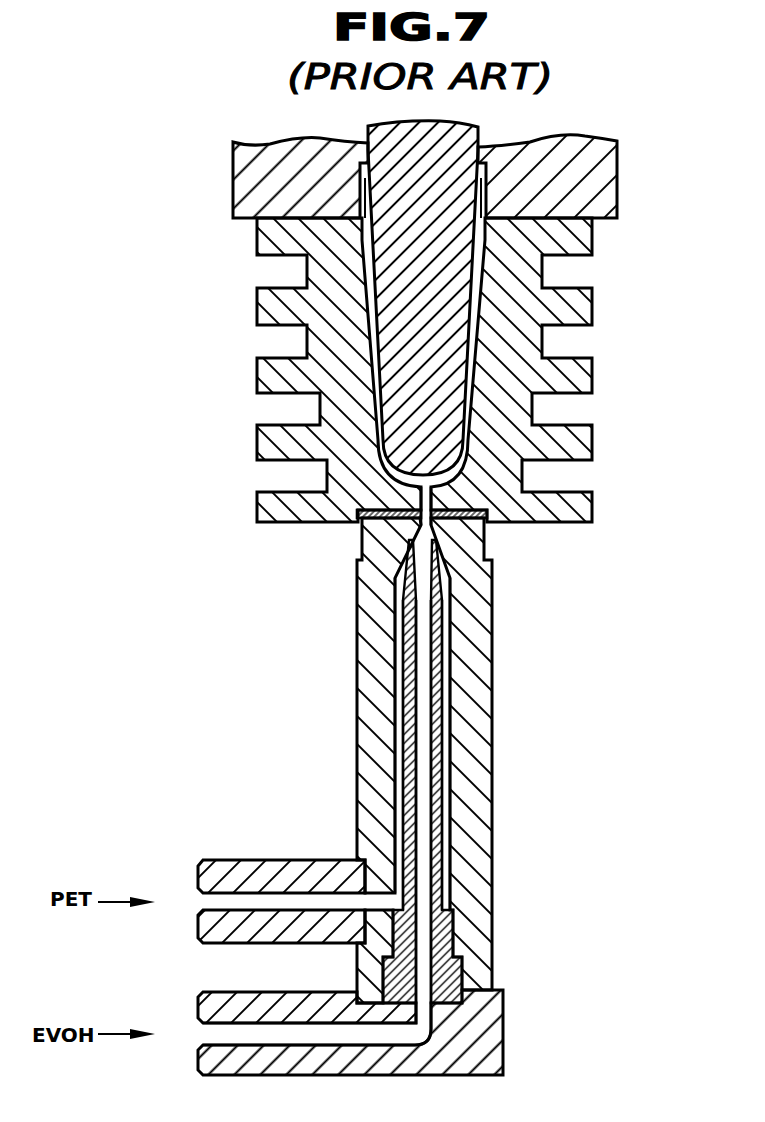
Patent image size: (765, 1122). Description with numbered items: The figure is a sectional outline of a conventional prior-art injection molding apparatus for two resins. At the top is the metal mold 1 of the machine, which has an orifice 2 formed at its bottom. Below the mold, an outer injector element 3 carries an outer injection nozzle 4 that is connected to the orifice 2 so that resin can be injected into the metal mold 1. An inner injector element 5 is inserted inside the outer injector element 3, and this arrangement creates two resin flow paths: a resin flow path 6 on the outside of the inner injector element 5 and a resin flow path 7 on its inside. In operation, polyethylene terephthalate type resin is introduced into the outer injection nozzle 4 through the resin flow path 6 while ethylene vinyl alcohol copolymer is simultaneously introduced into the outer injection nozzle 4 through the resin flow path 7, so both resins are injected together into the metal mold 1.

The metal mold 1 is at (592, 310).
The orifice 2 is at (430, 503).
The outer injector element 3 is at (493, 667).
The outer injection nozzle 4 is at (483, 527).
The inner injector element 5 is at (407, 662).
The resin flow path 6 is at (390, 738).
The resin flow path 7 is at (422, 747).